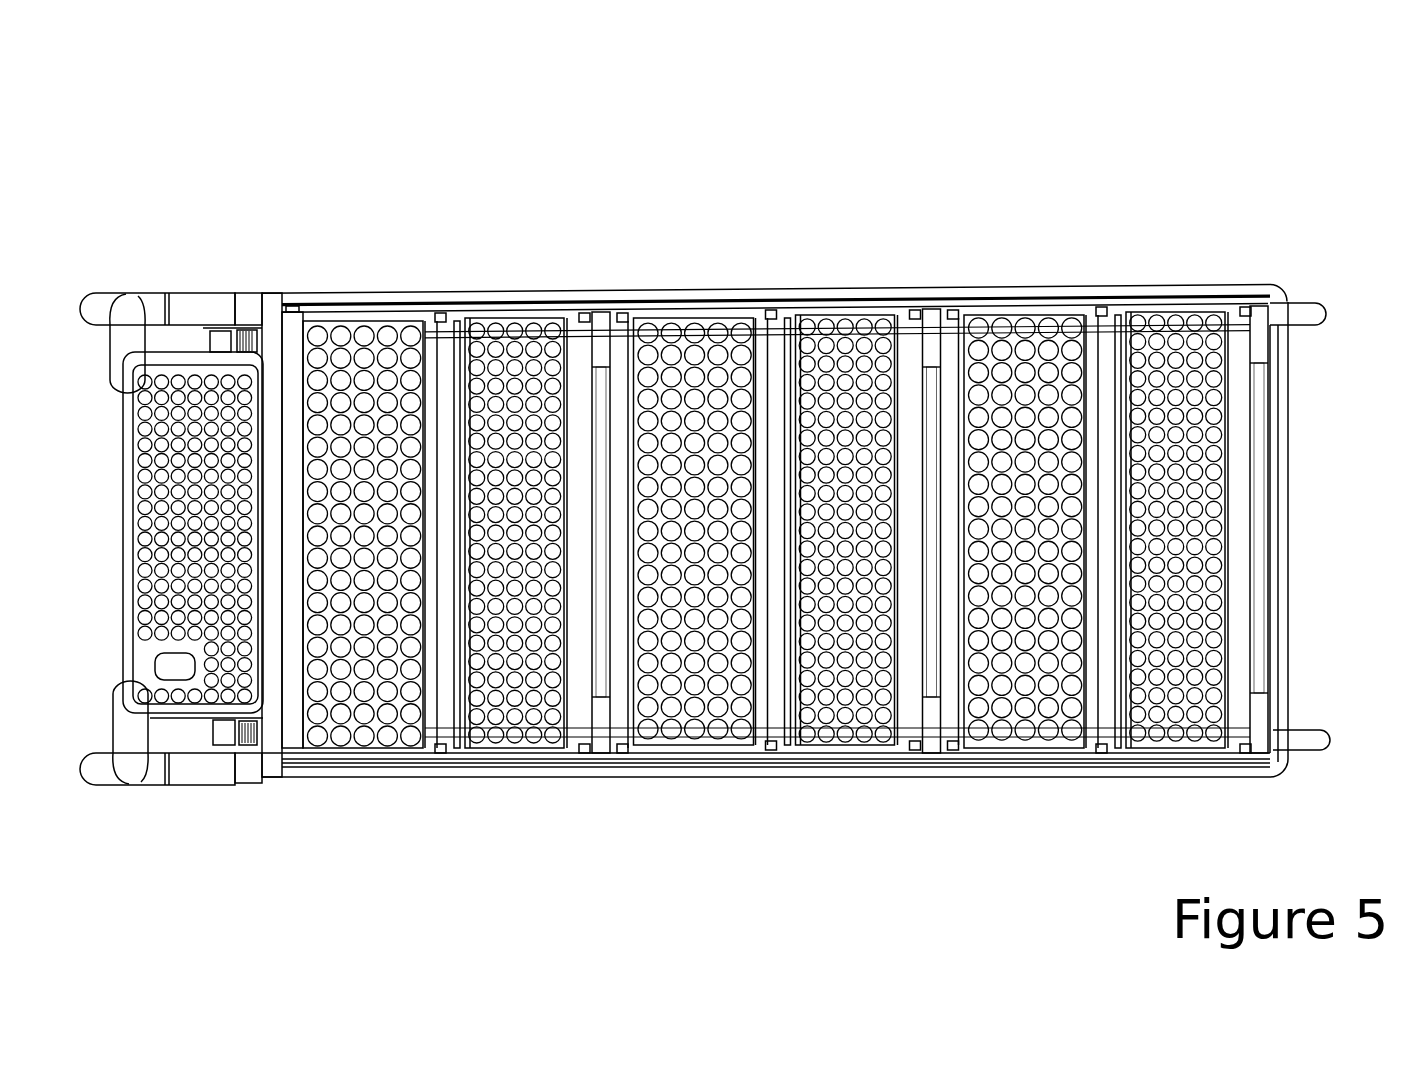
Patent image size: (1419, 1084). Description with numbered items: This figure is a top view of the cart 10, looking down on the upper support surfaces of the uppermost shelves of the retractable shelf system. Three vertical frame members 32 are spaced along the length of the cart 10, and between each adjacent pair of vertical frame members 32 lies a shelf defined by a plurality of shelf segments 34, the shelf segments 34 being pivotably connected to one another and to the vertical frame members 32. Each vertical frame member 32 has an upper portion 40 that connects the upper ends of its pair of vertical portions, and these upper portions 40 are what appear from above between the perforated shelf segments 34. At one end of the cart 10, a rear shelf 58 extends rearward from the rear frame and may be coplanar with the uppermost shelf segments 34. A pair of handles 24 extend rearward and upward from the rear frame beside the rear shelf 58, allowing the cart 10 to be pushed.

The cart 10 is at (1317, 171).
The handles 24 is at (122, 292).
The vertical frame members 32 is at (590, 378).
The shelf segments 34 is at (503, 333).
The upper portion 40 is at (590, 688).
The rear shelf 58 is at (203, 352).